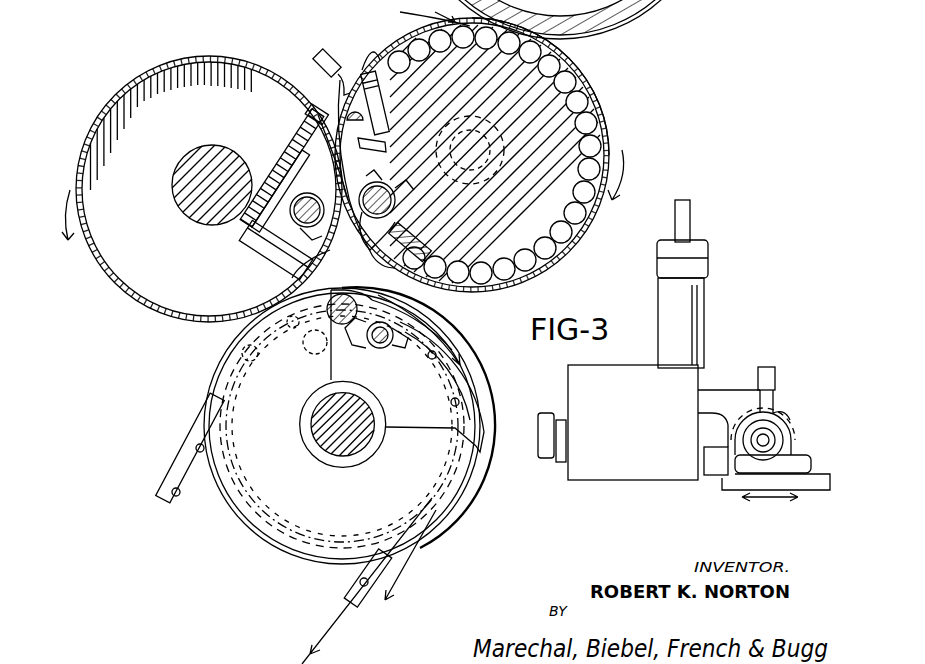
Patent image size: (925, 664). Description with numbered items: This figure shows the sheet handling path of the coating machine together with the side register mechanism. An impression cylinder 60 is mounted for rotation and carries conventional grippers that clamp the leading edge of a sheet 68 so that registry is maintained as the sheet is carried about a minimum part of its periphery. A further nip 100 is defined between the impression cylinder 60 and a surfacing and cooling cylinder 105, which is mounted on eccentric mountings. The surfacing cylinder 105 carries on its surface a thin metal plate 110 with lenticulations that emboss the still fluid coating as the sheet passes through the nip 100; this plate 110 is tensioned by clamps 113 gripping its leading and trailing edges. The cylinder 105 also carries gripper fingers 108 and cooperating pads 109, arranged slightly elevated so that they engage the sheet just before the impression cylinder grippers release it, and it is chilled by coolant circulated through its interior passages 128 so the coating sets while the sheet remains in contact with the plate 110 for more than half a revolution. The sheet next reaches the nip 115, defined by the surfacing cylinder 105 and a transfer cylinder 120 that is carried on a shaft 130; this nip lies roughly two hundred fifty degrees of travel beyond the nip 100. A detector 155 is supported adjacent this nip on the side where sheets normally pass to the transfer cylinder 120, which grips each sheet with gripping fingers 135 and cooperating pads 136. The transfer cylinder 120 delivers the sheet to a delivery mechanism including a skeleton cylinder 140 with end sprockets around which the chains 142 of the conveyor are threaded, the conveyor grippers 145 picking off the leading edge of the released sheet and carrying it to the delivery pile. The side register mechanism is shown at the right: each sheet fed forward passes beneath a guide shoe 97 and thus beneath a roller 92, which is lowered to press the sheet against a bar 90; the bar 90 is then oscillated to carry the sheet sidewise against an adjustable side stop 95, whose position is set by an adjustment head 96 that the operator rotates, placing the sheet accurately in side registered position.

The impression cylinder 60 is at (660, 2).
The further nip 100 is at (434, 13).
The surfacing and cooling cylinder 105 is at (598, 118).
The thin metal plate 110 is at (610, 148).
The interior passages 128 is at (572, 80).
The clamps 113 is at (372, 80).
The detector 155 is at (320, 52).
The gripper fingers 108 is at (374, 178).
The cooperating pads 109 is at (398, 255).
The transfer cylinder 120 is at (212, 128).
The shaft 130 is at (186, 216).
The next nip 115 is at (300, 135).
The gripping fingers 135 is at (326, 240).
The cooperating pads 136 is at (292, 263).
The skeleton cylinder 140 is at (266, 554).
The grippers 145 is at (392, 300).
The chains 142 is at (170, 470).
The sheet 68 is at (820, 476).
The roller 92 is at (780, 426).
The adjustment head 96 is at (545, 460).
The adjustable side stop 95 is at (710, 478).
The bar 90 is at (735, 486).
The guide shoe 97 is at (766, 462).